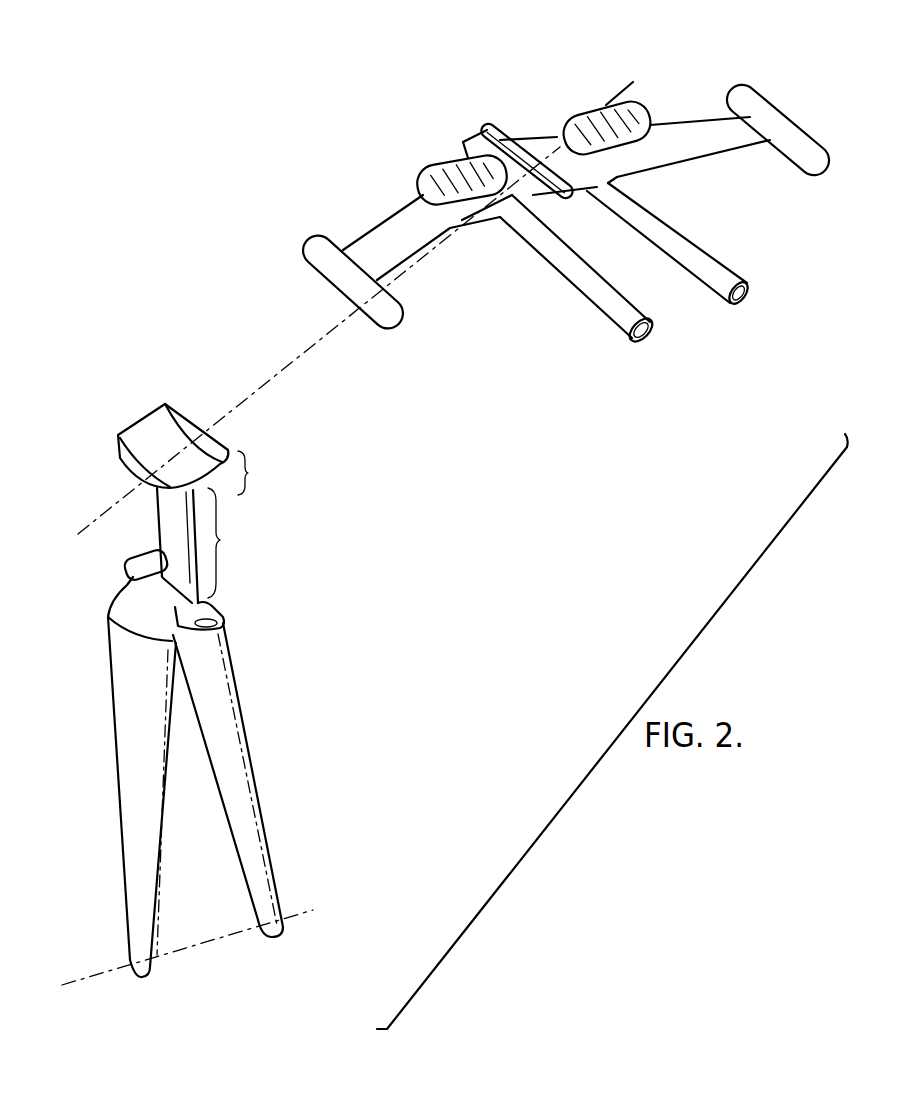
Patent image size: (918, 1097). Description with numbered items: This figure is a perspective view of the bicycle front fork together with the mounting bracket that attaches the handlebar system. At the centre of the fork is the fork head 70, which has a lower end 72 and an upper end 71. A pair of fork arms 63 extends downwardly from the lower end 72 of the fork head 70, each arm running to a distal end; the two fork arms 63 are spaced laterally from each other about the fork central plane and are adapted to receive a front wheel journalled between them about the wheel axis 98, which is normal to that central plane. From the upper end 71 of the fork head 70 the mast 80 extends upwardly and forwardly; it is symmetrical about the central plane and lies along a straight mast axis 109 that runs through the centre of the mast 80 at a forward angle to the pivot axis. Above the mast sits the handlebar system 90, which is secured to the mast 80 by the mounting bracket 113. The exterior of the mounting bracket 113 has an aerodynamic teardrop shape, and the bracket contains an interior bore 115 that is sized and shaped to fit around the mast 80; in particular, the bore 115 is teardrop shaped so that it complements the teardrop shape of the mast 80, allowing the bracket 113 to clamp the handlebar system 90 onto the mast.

The handlebar system 90 is at (385, 160).
The mounting bracket 113 is at (487, 129).
The interior bore 115 is at (588, 192).
The mast axis 109 is at (277, 374).
The upper end 71 is at (118, 453).
The mast 80 is at (259, 473).
The fork head 70 is at (207, 545).
The lower end 72 is at (127, 578).
The fork arms 63 is at (257, 793).
The wheel axis 98 is at (305, 912).